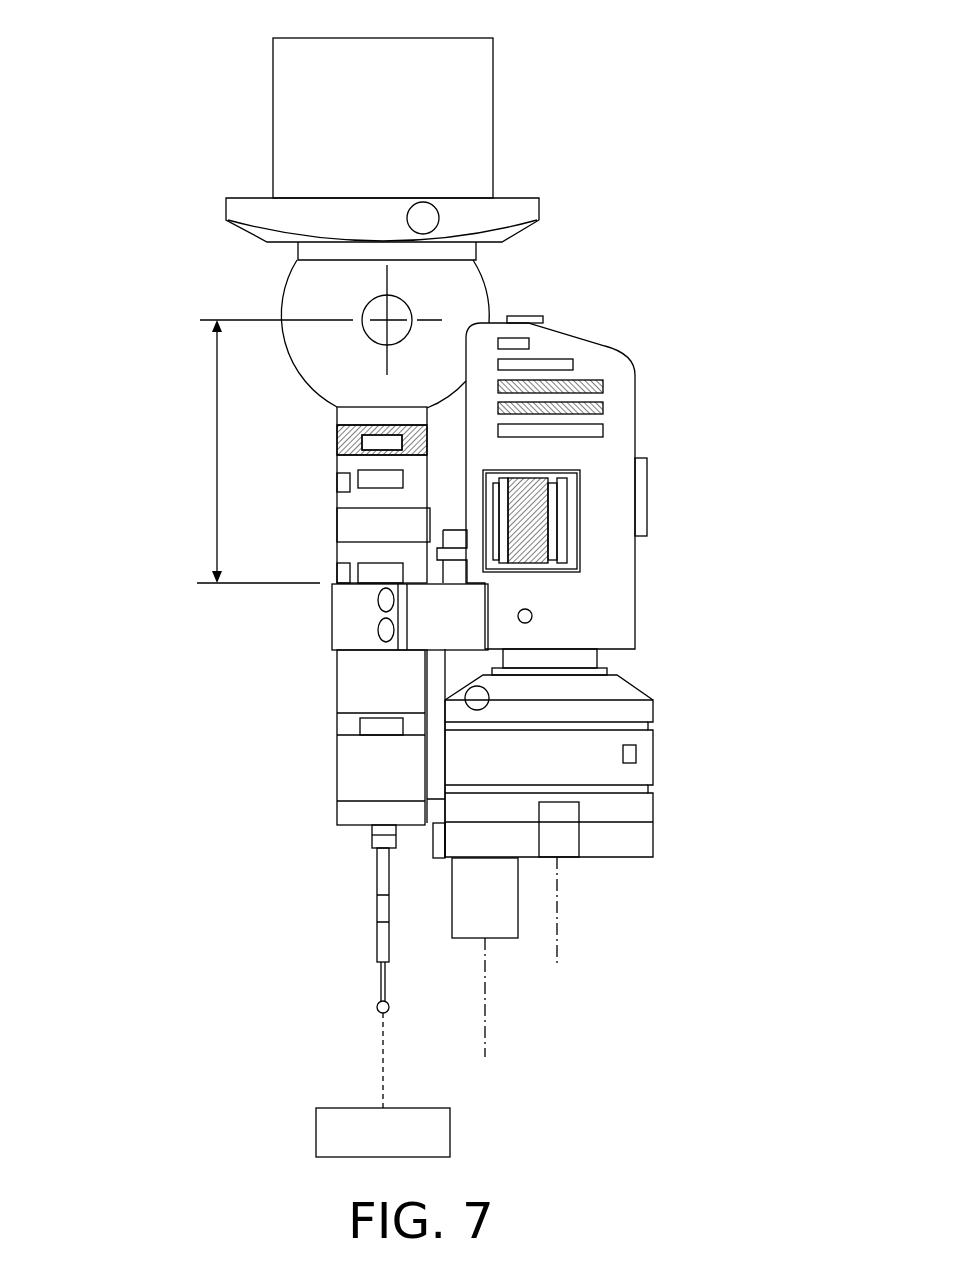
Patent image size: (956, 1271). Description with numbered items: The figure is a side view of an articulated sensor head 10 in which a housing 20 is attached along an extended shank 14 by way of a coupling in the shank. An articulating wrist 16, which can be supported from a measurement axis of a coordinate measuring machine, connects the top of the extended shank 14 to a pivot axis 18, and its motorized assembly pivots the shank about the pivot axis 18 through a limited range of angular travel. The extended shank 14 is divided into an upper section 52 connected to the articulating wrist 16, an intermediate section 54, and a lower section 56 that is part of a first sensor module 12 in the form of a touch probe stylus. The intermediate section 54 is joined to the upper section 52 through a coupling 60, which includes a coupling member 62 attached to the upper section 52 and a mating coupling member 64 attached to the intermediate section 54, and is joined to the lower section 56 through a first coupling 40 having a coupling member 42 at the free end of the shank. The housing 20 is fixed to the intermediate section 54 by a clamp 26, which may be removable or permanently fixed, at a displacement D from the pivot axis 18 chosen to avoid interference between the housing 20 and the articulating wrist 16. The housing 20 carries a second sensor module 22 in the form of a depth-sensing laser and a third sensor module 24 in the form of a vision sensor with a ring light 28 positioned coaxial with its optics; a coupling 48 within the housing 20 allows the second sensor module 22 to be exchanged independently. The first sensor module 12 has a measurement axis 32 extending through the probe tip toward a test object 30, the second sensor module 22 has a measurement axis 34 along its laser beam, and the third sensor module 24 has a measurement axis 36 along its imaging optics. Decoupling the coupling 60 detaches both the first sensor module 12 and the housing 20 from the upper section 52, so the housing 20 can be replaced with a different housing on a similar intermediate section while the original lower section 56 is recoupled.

The articulated sensor head 10 is at (196, 46).
The first sensor module 12 is at (372, 932).
The extended shank 14 is at (343, 527).
The articulating wrist 16 is at (288, 286).
The pivot axis 18 is at (392, 313).
The housing 20 is at (636, 412).
The second sensor module 22 is at (468, 943).
The third sensor module 24 is at (654, 768).
The clamp 26 is at (357, 615).
The ring light 28 is at (654, 842).
The test object 30 is at (316, 1130).
The measurement axis 32 is at (386, 1060).
The measurement axis 34 is at (488, 1020).
The measurement axis 36 is at (560, 938).
The first coupling 40 is at (326, 722).
The coupling member 42 is at (383, 711).
The coupling 48 is at (436, 866).
The upper section 52 is at (333, 415).
The intermediate section 54 is at (337, 556).
The lower section 56 is at (370, 737).
The coupling 60 is at (326, 437).
The coupling member 62 is at (400, 425).
The mating coupling member 64 is at (357, 455).
The displacement D is at (215, 453).